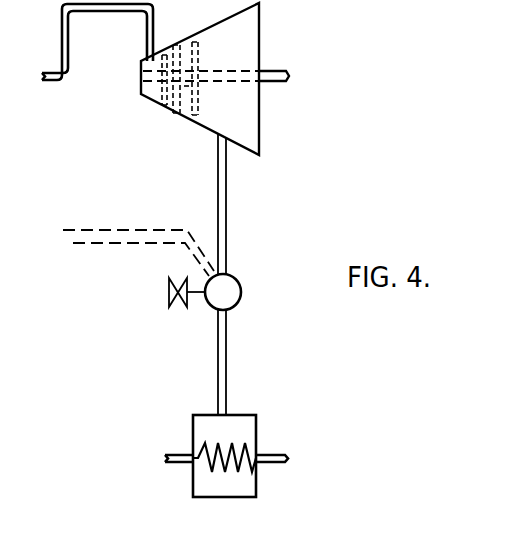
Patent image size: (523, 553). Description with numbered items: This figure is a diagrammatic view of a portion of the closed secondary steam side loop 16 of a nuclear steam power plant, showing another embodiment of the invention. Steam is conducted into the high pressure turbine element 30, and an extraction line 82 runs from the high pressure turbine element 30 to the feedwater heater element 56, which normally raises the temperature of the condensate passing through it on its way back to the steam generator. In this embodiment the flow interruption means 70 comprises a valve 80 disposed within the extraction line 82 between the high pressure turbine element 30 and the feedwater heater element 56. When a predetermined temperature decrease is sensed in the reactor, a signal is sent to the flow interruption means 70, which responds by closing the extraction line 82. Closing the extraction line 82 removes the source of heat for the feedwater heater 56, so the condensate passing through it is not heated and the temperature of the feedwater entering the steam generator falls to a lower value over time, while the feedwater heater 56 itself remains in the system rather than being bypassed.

The closed secondary side or loop 16 is at (72, 160).
The high pressure turbine element 30 is at (248, 30).
The extraction line 82 is at (228, 202).
The flow interruption means 70 is at (295, 262).
The valve 80 is at (239, 298).
The feedwater heater element 56 is at (243, 490).